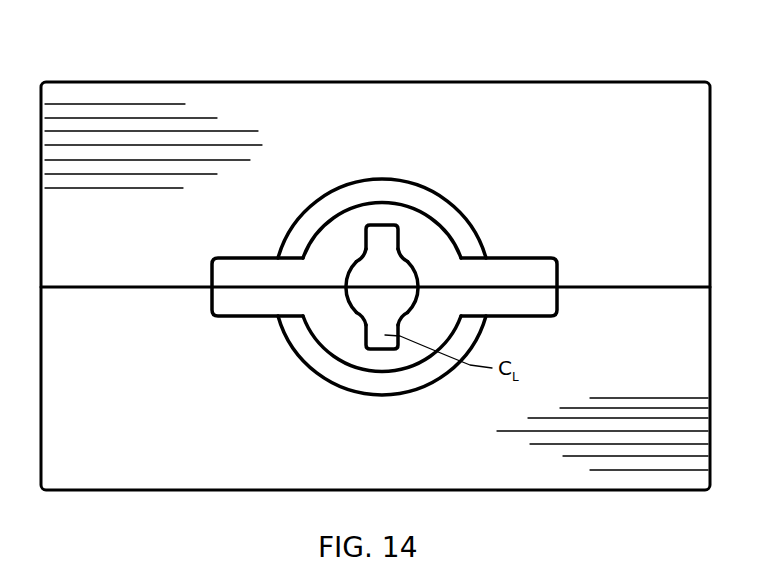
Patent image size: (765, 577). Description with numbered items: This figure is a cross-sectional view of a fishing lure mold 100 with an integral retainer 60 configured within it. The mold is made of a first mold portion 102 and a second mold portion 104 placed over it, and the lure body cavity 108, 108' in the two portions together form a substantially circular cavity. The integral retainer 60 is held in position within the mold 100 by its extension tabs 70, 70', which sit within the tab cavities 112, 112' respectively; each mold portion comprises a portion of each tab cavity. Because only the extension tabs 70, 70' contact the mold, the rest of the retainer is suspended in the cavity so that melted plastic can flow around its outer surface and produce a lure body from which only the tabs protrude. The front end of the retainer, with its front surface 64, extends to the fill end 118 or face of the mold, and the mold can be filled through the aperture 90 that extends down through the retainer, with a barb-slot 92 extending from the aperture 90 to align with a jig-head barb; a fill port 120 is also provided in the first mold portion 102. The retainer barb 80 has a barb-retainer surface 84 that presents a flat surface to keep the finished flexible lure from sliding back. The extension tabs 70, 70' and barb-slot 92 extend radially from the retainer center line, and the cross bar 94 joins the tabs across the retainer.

The fishing lure mold 100 is at (80, 77).
The first mold portion 102 is at (196, 468).
The second mold portion 104 is at (186, 106).
The fill end 118 is at (622, 142).
The integral retainer 60 is at (383, 285).
The retainer barb 80 is at (368, 297).
The barb-retainer surface 84 is at (368, 390).
The lure body cavity 108 is at (368, 366).
The lure body cavity 108' is at (382, 194).
The cross bar 94 is at (383, 292).
The extension tab 70 is at (226, 254).
The extension tab 70' is at (539, 259).
The tab cavity 112 is at (226, 266).
The tab cavity 112' is at (539, 264).
The aperture 90 is at (426, 296).
The barb-slot 92 is at (420, 292).
The front surface 64 is at (363, 352).
The fill port 120 is at (397, 273).